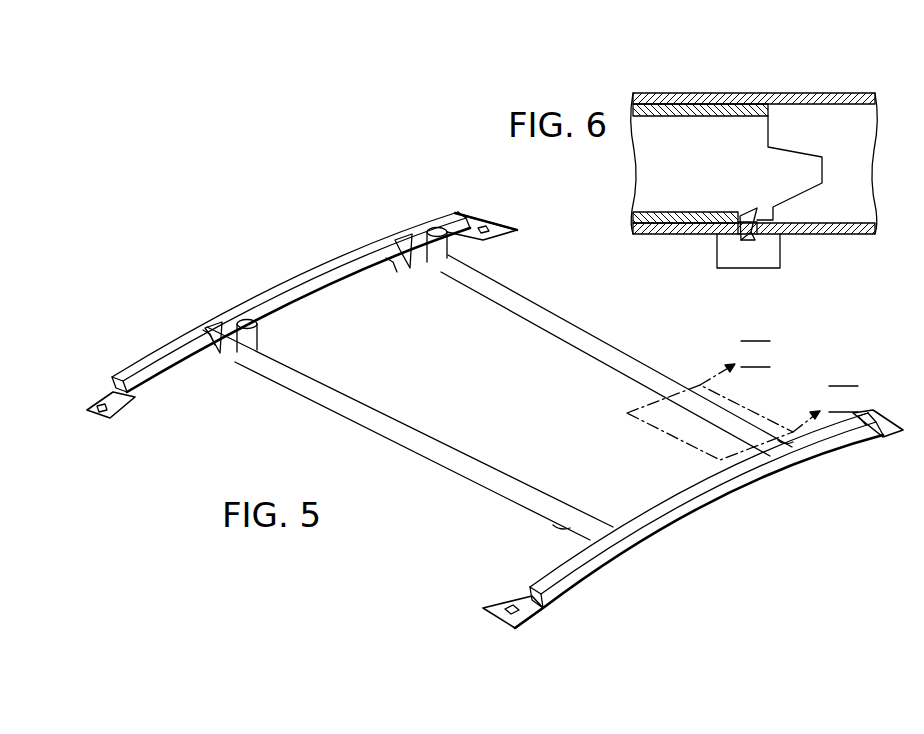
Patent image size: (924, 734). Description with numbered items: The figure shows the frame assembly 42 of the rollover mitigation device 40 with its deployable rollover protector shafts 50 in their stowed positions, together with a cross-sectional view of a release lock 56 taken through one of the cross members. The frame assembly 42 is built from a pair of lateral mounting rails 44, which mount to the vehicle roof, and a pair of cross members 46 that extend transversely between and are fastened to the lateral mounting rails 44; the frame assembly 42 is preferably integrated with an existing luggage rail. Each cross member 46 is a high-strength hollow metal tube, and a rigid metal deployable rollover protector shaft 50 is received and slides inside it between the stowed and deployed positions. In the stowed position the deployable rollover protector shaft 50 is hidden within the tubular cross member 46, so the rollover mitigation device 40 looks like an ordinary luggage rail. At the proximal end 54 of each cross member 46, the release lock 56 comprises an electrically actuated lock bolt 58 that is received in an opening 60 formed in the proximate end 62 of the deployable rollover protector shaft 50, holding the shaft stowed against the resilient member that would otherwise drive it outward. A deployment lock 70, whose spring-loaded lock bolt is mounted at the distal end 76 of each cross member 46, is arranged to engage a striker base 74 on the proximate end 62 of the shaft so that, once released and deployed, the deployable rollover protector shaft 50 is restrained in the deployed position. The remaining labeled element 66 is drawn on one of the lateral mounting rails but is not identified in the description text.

In FIG. 5, the rollover mitigation device 40 is at (263, 183).
In FIG. 5, the frame assembly 42 is at (668, 520).
In FIG. 5, the lateral mounting rails 44 is at (130, 403).
In FIG. 5, the cross member 46 is at (523, 307).
In FIG. 6, the cross member 46 is at (727, 151).
In FIG. 6, the deployable rollover protector shaft 50 is at (668, 93).
In FIG. 5, the proximal end 54 is at (740, 418).
In FIG. 6, the proximal end 54 is at (800, 93).
In FIG. 5, the release lock 56 is at (745, 433).
In FIG. 6, the release lock 56 is at (784, 257).
In FIG. 6, the electrically actuated lock bolt 58 is at (757, 236).
In FIG. 6, the opening 60 is at (758, 226).
In FIG. 6, the proximate end 62 is at (688, 223).
In FIG. 5, the side rail 66 is at (270, 282).
In FIG. 5, the deployment lock 70 is at (447, 247).
In FIG. 6, the striker base 74 is at (775, 147).
In FIG. 5, the distal end 76 is at (262, 365).